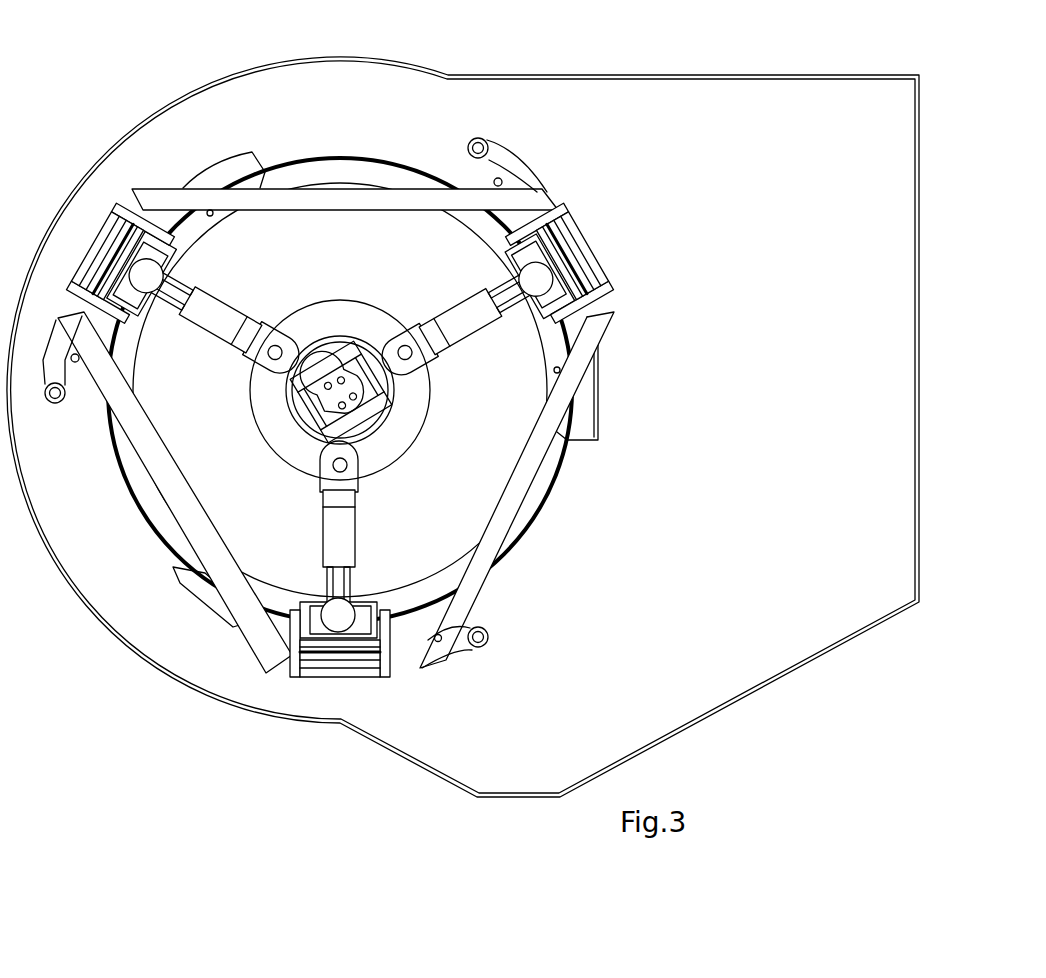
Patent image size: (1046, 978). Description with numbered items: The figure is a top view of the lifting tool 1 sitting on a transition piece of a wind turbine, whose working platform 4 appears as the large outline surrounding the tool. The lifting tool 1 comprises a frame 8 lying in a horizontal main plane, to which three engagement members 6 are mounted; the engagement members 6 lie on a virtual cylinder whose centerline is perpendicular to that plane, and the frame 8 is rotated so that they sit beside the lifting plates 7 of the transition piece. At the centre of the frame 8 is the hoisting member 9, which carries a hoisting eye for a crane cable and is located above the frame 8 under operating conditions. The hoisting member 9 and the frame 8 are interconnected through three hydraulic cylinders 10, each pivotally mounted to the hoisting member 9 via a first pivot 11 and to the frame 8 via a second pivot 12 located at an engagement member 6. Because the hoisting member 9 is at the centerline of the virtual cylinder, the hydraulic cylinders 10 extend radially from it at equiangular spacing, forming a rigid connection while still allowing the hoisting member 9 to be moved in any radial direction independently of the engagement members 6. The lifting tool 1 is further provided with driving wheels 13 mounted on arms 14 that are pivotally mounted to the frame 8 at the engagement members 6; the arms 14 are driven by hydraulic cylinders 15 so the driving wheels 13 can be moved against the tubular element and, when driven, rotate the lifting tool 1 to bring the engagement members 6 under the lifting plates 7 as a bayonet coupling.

The lifting tool 1 is at (369, 427).
The working platform 4 is at (693, 108).
The engagement members 6 is at (327, 675).
The lifting plates 7 is at (580, 396).
The frame 8 is at (503, 488).
The hoisting member 9 is at (377, 387).
The hydraulic cylinders 10 is at (463, 327).
The first pivots 11 is at (347, 466).
The second pivots 12 is at (338, 615).
The driving wheels 13 is at (487, 650).
The arms 14 is at (445, 662).
The hydraulic cylinders 15 is at (435, 640).